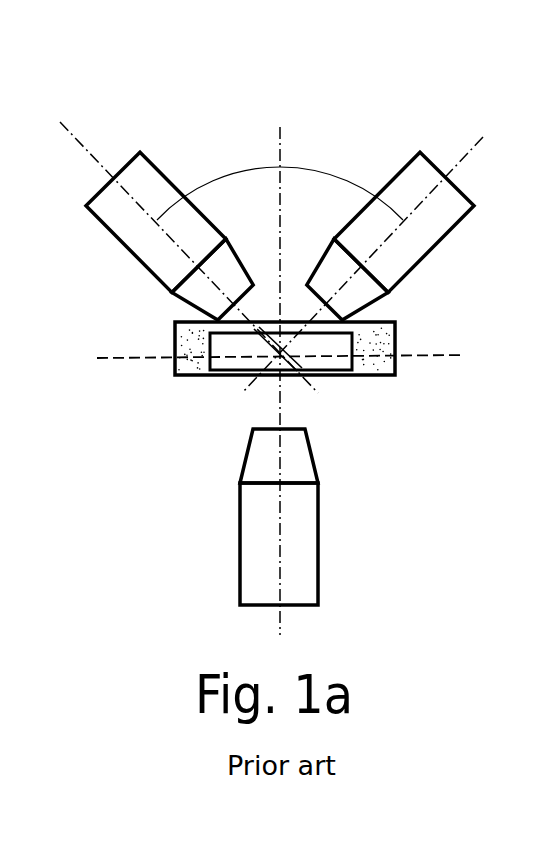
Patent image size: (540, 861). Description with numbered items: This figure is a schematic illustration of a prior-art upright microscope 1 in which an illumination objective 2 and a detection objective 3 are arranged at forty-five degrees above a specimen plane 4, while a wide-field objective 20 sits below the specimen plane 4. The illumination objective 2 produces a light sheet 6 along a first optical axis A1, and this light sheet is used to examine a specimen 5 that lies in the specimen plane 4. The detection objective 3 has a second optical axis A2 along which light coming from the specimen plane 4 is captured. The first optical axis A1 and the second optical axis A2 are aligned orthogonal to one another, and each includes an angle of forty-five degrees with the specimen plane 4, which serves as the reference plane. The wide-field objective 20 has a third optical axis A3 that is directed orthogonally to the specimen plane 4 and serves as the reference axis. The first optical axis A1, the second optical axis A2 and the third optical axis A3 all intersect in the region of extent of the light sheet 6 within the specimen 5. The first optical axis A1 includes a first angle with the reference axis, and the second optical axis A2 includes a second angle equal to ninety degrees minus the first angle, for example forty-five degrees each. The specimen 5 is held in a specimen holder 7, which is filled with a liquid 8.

The upright microscope 1 is at (233, 41).
The illumination objective 2 is at (112, 235).
The detection objective 3 is at (452, 232).
The specimen plane 4 is at (287, 336).
The specimen 5 is at (330, 357).
The light sheet 6 is at (270, 345).
The specimen holder 7 is at (270, 357).
The liquid 8 is at (187, 321).
The wide-field objective 20 is at (240, 538).
The first optical axis A1 is at (80, 142).
The second optical axis A2 is at (483, 140).
The third optical axis A3 is at (282, 630).